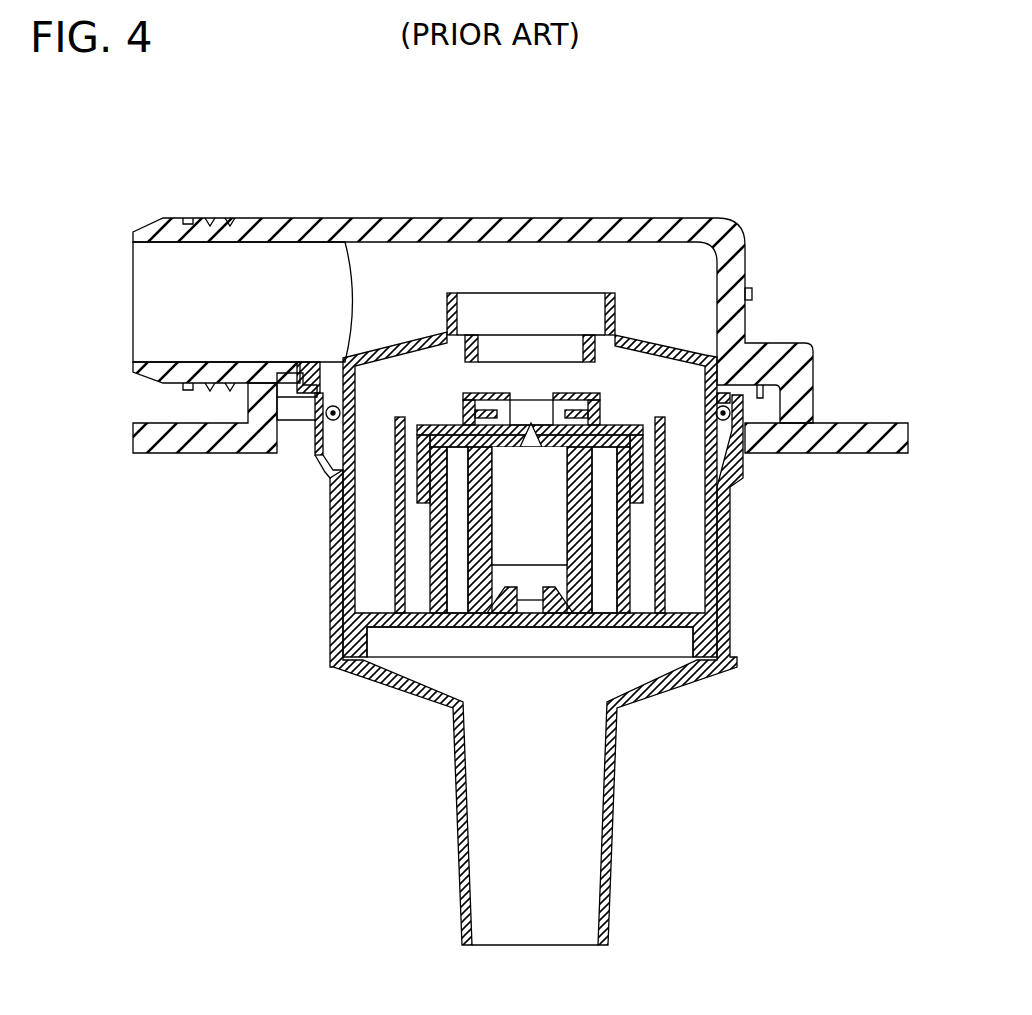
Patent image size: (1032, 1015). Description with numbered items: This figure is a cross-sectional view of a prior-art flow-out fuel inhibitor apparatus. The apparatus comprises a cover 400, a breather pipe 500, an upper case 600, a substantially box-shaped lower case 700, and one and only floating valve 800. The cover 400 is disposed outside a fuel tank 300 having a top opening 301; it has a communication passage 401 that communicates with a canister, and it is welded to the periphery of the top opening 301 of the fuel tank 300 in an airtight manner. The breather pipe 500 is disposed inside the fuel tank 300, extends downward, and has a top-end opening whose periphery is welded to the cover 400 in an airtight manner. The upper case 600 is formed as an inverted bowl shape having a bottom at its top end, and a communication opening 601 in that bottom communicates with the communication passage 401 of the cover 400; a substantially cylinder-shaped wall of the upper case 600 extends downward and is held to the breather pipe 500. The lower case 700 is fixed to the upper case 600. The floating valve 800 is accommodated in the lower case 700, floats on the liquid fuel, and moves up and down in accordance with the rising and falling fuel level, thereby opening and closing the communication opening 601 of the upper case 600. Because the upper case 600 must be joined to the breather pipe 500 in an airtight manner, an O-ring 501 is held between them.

The cover 400 is at (638, 222).
The communication passage 401 is at (157, 288).
The fuel tank 300 is at (865, 423).
The top opening 301 is at (287, 443).
The O-ring 501 is at (323, 417).
The breather pipe 500 is at (610, 860).
The upper case 600 is at (668, 345).
The communication opening 601 is at (508, 347).
The lower case 700 is at (373, 632).
The floating valve 800 is at (632, 540).